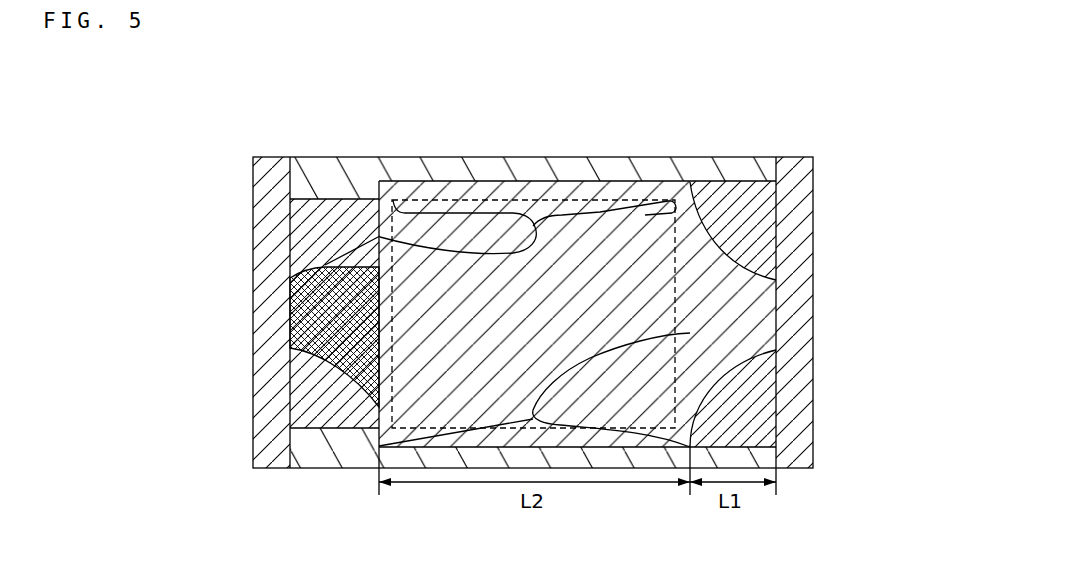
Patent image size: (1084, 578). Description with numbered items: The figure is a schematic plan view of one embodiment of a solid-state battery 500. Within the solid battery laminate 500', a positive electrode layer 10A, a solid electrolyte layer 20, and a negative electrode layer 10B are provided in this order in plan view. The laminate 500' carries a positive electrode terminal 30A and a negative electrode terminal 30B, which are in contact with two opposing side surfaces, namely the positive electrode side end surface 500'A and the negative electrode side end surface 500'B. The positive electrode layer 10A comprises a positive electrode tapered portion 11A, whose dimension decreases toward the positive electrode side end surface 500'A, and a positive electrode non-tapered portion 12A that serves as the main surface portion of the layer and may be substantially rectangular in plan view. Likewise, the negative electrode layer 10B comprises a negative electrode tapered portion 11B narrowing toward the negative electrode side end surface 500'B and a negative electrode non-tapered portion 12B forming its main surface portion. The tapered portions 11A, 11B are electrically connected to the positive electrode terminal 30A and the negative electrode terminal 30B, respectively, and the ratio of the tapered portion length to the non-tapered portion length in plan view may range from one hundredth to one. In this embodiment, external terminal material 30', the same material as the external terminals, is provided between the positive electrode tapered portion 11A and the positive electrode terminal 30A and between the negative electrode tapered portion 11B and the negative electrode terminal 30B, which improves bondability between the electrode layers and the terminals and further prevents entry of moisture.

The solid-state battery 500 is at (556, 276).
The solid battery laminate 500' is at (533, 272).
The positive electrode side end surface 500'A is at (207, 405).
The negative electrode side end surface 500'B is at (854, 398).
The positive electrode layer 10A is at (177, 196).
The positive electrode tapered portion 11A is at (327, 263).
The positive electrode non-tapered portion 12A is at (380, 237).
The negative electrode layer 10B is at (885, 296).
The negative electrode tapered portion 11B is at (694, 352).
The negative electrode non-tapered portion 12B is at (690, 333).
The solid electrolyte layer 20 is at (313, 382).
The positive electrode terminal 30A is at (290, 433).
The negative electrode terminal 30B is at (805, 442).
The external terminal material 30' is at (590, 351).